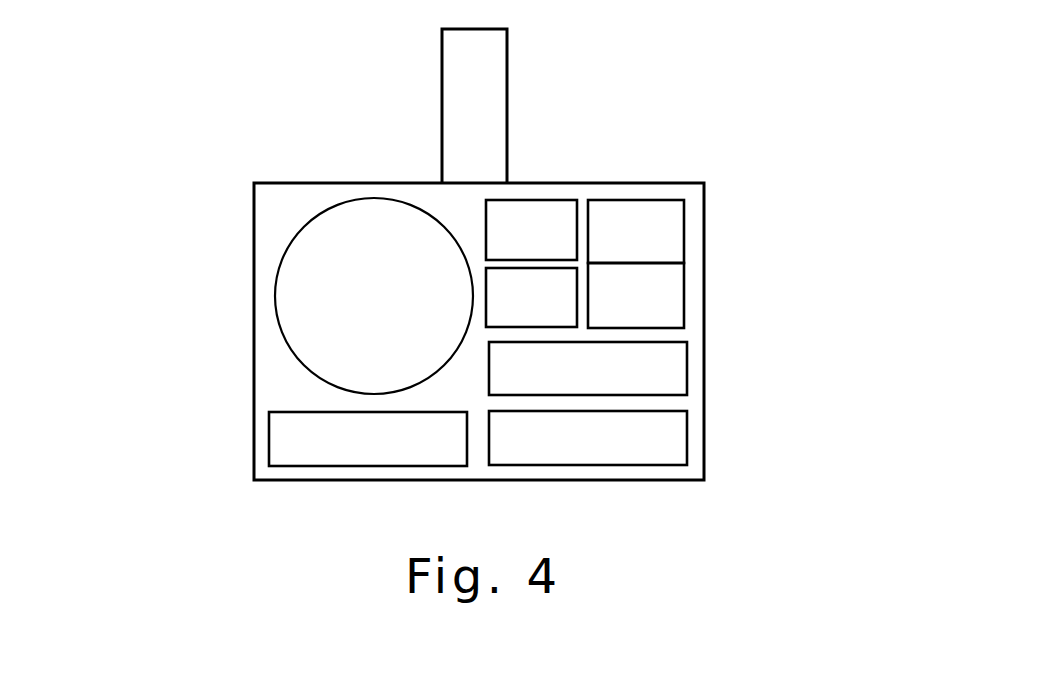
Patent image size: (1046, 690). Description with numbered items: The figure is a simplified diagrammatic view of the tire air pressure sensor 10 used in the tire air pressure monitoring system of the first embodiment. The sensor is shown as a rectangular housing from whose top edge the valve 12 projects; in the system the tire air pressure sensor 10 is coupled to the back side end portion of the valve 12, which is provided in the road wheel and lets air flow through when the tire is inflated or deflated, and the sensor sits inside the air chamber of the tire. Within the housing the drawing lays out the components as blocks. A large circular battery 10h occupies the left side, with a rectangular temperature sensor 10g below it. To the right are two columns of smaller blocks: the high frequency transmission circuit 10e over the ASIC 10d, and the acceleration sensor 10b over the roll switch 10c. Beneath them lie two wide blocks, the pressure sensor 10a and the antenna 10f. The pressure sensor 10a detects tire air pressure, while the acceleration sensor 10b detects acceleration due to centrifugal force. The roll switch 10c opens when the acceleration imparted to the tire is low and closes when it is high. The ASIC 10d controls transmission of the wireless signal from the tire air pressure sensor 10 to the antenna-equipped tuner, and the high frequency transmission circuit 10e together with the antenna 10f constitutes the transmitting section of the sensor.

The tire air pressure sensor 10 is at (277, 179).
The valve 12 is at (489, 118).
The pressure sensor 10a is at (638, 370).
The acceleration sensor 10b is at (637, 237).
The roll switch 10c is at (638, 305).
The ASIC 10d is at (507, 307).
The high frequency transmission circuit 10e is at (538, 220).
The antenna 10f is at (638, 438).
The temperature sensor 10g is at (287, 440).
The battery 10h is at (317, 248).